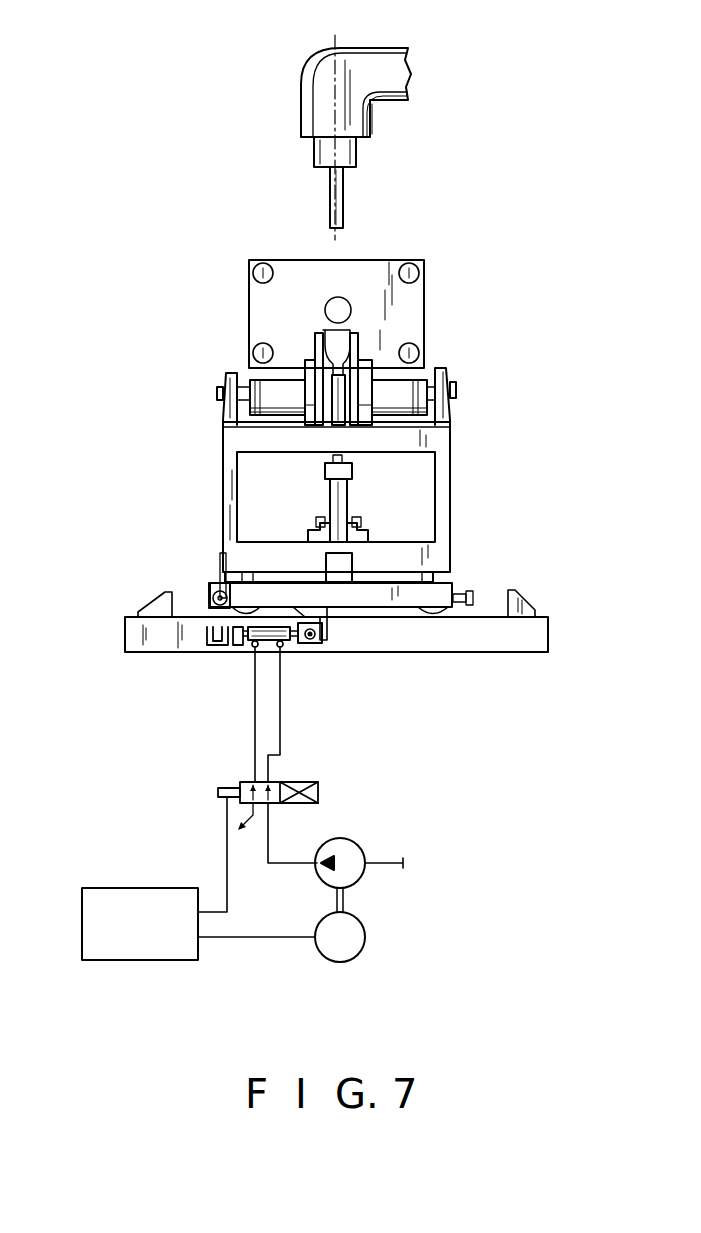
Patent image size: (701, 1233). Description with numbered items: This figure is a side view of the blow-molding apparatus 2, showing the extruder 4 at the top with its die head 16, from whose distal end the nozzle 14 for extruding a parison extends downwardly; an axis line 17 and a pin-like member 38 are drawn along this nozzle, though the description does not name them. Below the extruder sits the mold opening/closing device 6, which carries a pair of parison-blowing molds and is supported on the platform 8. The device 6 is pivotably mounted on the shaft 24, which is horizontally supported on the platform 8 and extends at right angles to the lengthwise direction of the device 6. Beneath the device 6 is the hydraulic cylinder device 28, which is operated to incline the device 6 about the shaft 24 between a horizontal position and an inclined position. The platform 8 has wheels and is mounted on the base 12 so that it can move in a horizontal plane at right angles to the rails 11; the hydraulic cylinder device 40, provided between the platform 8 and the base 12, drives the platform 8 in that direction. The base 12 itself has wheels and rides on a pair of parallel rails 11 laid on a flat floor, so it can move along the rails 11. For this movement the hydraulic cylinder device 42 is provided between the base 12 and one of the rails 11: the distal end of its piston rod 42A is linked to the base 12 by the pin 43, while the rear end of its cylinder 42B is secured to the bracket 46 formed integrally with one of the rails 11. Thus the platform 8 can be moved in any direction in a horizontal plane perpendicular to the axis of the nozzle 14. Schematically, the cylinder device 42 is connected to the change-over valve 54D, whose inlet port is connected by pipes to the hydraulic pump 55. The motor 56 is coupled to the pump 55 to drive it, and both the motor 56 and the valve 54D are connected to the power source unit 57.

The blow-molding apparatus 2 is at (458, 250).
The extruder 4 is at (433, 77).
The mold opening/closing device 6 is at (249, 299).
The platform 8 is at (450, 491).
The rails 11 is at (548, 634).
The base 12 is at (443, 588).
The nozzle 14 is at (353, 152).
The die head 16 is at (364, 119).
The center axis 17 is at (335, 40).
The shaft 24 is at (432, 385).
The hydraulic cylinder device 28 is at (327, 490).
The pin 38 is at (343, 200).
The hydraulic cylinder device 40 is at (205, 592).
The hydraulic cylinder device 42 is at (287, 657).
The piston rod 42A is at (291, 648).
The cylinder 42B is at (262, 648).
The pin 43 is at (322, 636).
The bracket 46 is at (207, 638).
The change-over valve 54D is at (318, 789).
The hydraulic pump 55 is at (363, 847).
The motor 56 is at (365, 940).
The power source unit 57 is at (82, 925).